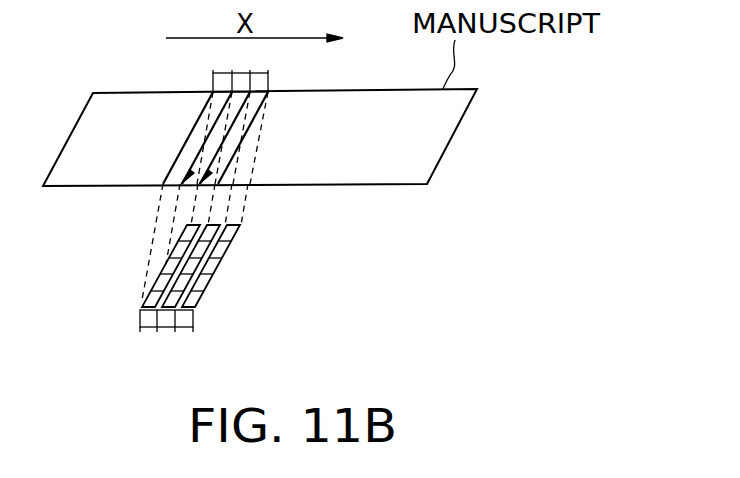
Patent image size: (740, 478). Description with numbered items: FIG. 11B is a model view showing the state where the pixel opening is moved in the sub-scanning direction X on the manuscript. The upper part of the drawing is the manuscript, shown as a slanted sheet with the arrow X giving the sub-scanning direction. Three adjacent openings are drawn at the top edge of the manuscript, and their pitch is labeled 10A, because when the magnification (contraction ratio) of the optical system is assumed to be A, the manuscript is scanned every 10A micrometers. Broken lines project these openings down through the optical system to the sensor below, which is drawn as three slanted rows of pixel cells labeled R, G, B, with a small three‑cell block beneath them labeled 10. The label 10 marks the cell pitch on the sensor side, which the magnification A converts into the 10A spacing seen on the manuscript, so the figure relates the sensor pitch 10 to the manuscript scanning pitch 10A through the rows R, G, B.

The scanning pitch on manuscript 10A is at (213, 74).
The sensor cells 10 is at (143, 320).
The red sensor strip R is at (169, 258).
The green sensor strip G is at (197, 268).
The blue sensor strip B is at (220, 262).